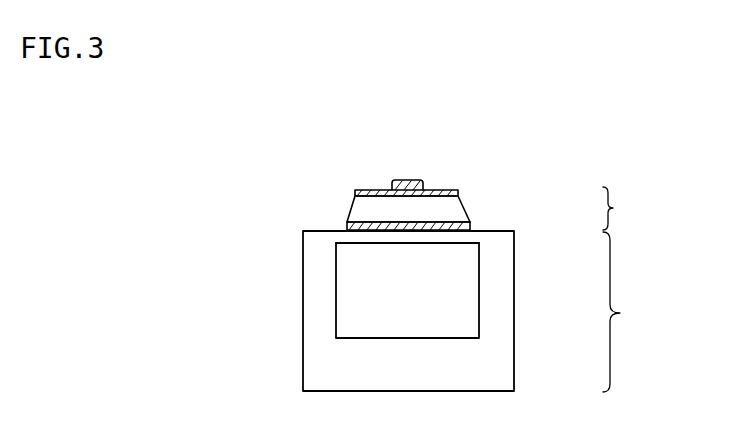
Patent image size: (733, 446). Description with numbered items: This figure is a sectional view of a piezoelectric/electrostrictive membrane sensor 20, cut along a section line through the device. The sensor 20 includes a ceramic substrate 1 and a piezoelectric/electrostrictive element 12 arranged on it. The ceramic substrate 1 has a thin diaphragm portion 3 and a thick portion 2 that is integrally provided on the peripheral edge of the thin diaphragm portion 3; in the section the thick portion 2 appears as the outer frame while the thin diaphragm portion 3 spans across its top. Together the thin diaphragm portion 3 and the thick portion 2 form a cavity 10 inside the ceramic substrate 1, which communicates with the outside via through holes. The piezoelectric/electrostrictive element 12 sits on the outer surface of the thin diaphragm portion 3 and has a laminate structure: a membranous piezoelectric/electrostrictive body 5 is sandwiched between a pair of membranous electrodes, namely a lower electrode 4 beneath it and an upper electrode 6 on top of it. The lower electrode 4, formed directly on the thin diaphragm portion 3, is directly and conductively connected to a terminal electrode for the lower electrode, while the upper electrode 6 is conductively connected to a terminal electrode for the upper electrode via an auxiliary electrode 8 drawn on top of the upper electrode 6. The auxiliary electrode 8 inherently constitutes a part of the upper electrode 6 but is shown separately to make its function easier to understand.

The ceramic substrate 1 is at (622, 312).
The thick portion 2 is at (488, 364).
The thin diaphragm portion 3 is at (395, 236).
The lower electrode 4 is at (396, 227).
The piezoelectric/electrostrictive body 5 is at (442, 212).
The upper electrode 6 is at (447, 190).
The auxiliary electrode 8 is at (410, 183).
The cavity 10 is at (462, 303).
The piezoelectric/electrostrictive element 12 is at (622, 208).
The piezoelectric/electrostrictive membrane sensor 20 is at (538, 155).